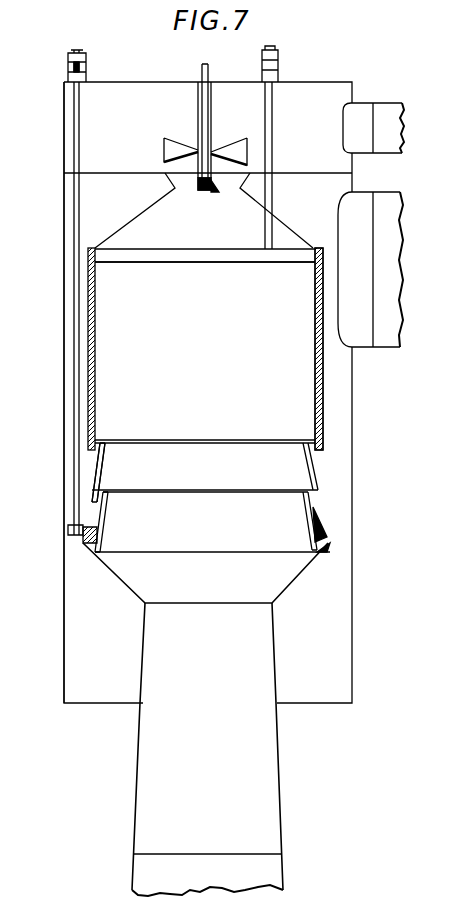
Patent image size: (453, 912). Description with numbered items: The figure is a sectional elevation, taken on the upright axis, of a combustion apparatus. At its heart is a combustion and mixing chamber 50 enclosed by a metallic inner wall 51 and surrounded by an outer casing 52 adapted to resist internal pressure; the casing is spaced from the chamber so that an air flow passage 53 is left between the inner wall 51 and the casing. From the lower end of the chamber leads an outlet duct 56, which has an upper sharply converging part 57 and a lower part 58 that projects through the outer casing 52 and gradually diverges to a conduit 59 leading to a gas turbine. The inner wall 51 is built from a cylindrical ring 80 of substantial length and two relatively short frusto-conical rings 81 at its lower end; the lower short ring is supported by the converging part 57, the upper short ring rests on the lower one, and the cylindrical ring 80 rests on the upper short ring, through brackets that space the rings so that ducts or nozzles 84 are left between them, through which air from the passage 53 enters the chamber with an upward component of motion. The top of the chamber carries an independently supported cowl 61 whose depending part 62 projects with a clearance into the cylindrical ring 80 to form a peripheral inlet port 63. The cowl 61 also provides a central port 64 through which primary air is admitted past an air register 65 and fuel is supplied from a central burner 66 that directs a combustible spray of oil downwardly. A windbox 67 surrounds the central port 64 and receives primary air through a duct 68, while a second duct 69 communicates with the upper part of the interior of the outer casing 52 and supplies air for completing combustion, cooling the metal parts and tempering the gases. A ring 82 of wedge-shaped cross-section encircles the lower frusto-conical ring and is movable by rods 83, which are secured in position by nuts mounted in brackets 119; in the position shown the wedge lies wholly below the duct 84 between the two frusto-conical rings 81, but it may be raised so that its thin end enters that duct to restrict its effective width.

The bracket 119 is at (68, 70).
The air register 65 is at (165, 147).
The central port 64 is at (185, 183).
The central burner 66 is at (219, 192).
The windbox 67 is at (303, 102).
The duct 68 is at (369, 112).
The second duct 69 is at (360, 205).
The cowl 61 is at (130, 222).
The peripheral inlet port 63 is at (88, 250).
The depending part 62 is at (115, 260).
The rods 83 is at (74, 325).
The combustion and mixing chamber 50 is at (100, 387).
The air flow passage 53 is at (68, 420).
The cylindrical ring 80 is at (323, 399).
The inner wall 51 is at (323, 443).
The ducts or nozzles 84 is at (318, 505).
The frusto-conical rings 81 is at (320, 478).
The ring of wedge-shaped cross-section 82 is at (93, 512).
The outer casing 52 is at (352, 528).
The upper sharply converging part 57 is at (300, 578).
The outlet duct 56 is at (262, 623).
The lower part 58 is at (267, 723).
The conduit 59 is at (282, 866).